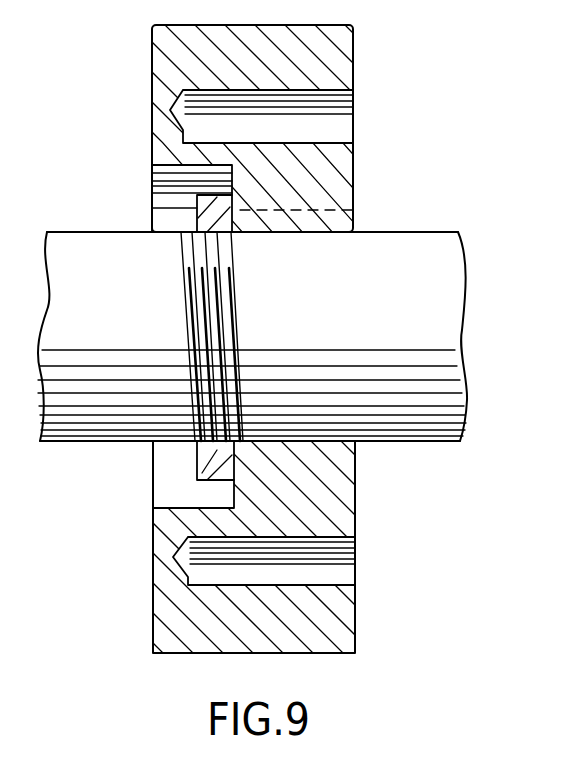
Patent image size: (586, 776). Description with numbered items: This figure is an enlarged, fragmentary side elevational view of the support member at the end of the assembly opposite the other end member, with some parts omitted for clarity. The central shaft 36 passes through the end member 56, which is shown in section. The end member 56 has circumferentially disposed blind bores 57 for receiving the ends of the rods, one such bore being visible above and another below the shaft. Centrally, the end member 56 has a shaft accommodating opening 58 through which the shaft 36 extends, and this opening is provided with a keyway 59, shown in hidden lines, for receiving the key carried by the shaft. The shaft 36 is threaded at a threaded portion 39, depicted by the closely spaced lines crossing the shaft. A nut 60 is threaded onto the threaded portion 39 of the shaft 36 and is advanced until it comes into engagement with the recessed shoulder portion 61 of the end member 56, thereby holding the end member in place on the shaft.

The central shaft 36 is at (417, 250).
The threaded portion 39 is at (197, 455).
The end member 56 is at (322, 620).
The blind bores 57 is at (334, 100).
The shaft accommodating opening 58 is at (338, 245).
The keyway 59 is at (300, 207).
The nut 60 is at (210, 468).
The recessed shoulder portion 61 is at (235, 208).